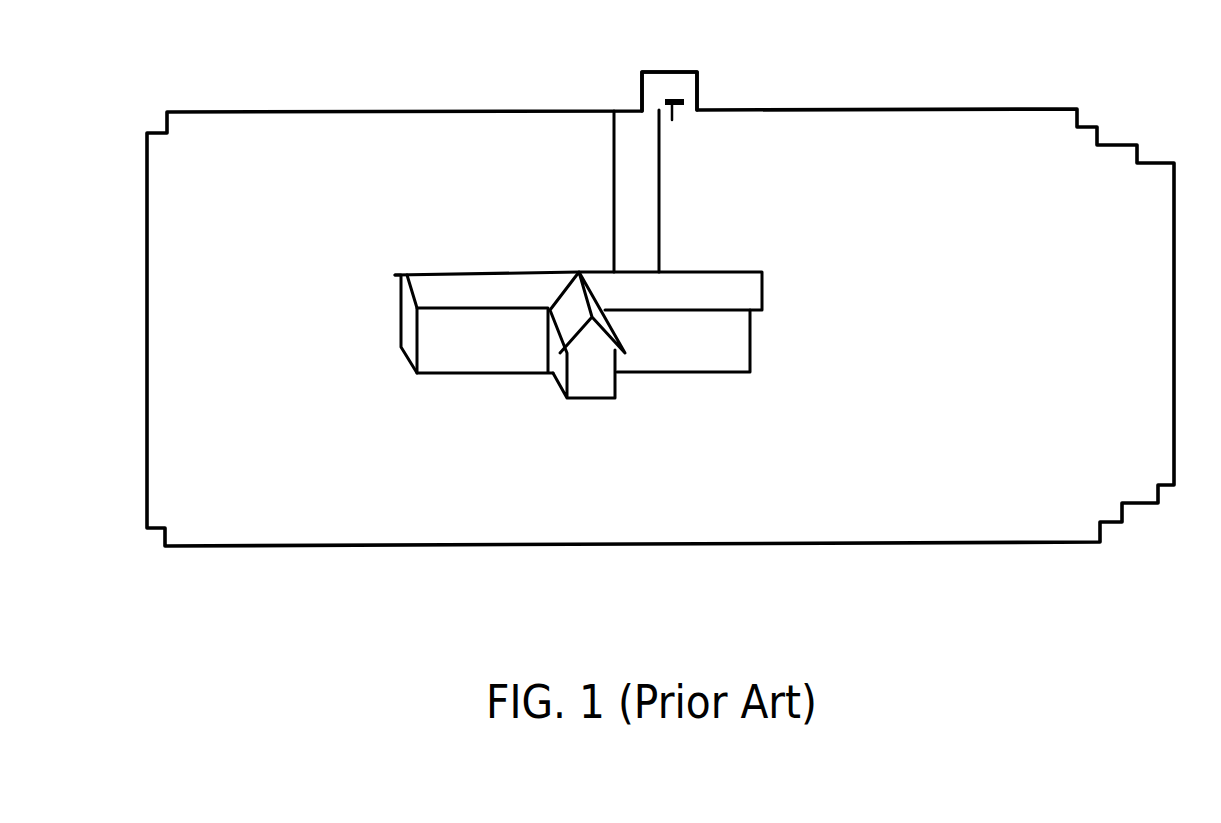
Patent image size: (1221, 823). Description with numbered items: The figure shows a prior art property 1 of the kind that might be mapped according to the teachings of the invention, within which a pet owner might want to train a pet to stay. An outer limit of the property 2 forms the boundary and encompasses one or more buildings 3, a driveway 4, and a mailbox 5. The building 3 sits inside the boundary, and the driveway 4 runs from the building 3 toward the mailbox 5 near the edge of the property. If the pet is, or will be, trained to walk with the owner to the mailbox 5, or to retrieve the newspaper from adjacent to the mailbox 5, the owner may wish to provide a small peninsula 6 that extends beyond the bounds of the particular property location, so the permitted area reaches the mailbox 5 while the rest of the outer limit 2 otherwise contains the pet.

The property 1 is at (1141, 118).
The outer limit of the property 2 is at (1176, 250).
The building 3 is at (692, 357).
The driveway 4 is at (626, 200).
The mailbox 5 is at (685, 118).
The peninsula 6 is at (681, 90).